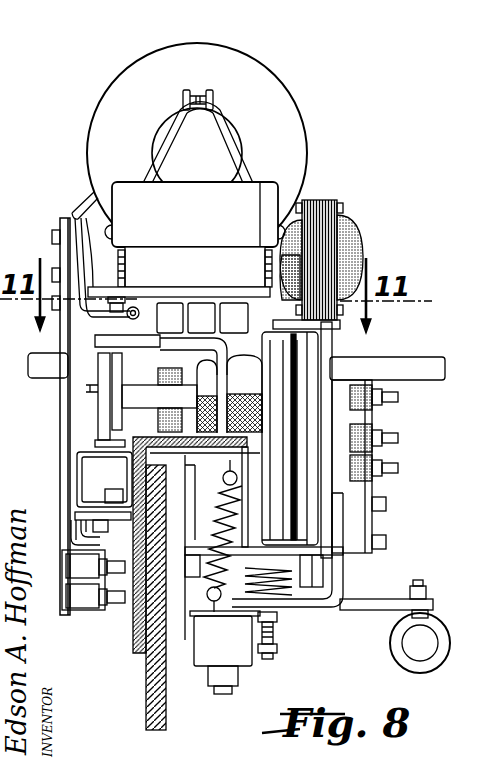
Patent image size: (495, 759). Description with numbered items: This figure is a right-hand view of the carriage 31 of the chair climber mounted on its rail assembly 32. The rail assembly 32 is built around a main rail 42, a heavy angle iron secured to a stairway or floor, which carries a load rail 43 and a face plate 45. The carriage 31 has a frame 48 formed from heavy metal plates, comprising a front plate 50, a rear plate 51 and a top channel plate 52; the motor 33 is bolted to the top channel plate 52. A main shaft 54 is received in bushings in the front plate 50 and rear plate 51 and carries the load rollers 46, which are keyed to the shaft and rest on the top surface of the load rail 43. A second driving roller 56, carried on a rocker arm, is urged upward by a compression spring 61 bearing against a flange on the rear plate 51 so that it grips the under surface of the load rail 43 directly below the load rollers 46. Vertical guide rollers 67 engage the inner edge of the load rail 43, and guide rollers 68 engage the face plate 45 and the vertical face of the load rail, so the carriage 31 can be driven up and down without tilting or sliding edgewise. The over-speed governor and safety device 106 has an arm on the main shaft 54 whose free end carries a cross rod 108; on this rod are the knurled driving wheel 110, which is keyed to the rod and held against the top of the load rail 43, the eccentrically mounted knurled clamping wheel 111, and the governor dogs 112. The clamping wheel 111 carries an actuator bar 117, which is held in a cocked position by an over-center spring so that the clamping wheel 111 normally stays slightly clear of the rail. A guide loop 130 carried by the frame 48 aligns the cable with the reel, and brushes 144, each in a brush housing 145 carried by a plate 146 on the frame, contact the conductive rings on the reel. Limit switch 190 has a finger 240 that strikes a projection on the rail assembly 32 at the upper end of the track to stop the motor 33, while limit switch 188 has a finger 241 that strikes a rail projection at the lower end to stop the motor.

The carriage 31 is at (364, 579).
The rail assembly 32 is at (176, 720).
The motor 33 is at (274, 101).
The main rail 42 is at (150, 694).
The load rail 43 is at (249, 458).
The face plate 45 is at (136, 626).
The load rollers 46 is at (201, 318).
The frame 48 is at (60, 436).
The front plate 50 is at (65, 339).
The rear plate 51 is at (324, 355).
The top channel plate 52 is at (88, 208).
The main shaft 54 is at (33, 380).
The second driving roller 56 is at (218, 472).
The compression spring 61 is at (278, 596).
The vertical guide rollers 67 is at (290, 381).
The guide rollers 68 is at (108, 484).
The over-speed governor and safety device 106 is at (140, 333).
The cross rod 108 is at (141, 393).
The knurled driving wheel 110 is at (197, 402).
The knurled clamping wheel 111 is at (255, 384).
The governor dogs 112 is at (106, 372).
The actuator bar 117 is at (120, 333).
The guide loop 130 is at (445, 654).
The brushes 144 is at (400, 400).
The brush housing 145 is at (375, 478).
The plate 146 is at (373, 517).
The limit switch 188 is at (97, 574).
The limit switch 190 is at (72, 600).
The finger 240 is at (125, 569).
The finger 241 is at (125, 597).